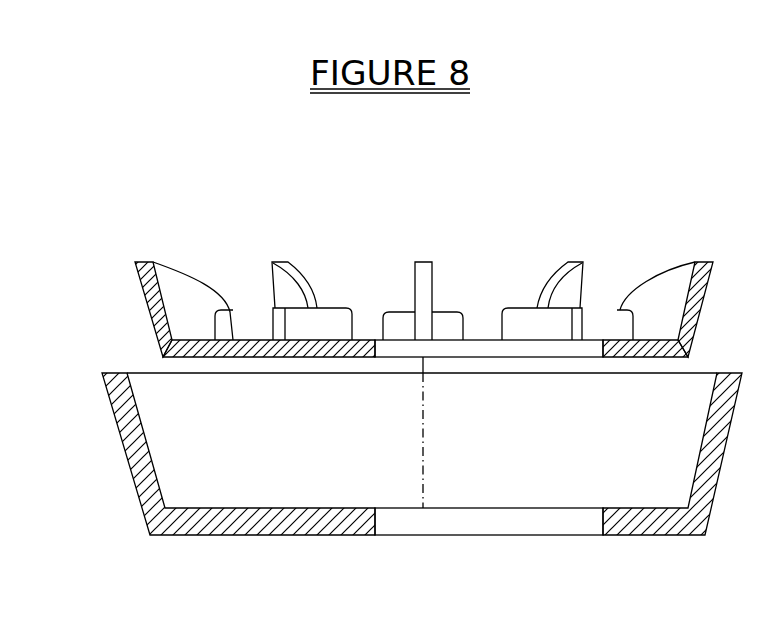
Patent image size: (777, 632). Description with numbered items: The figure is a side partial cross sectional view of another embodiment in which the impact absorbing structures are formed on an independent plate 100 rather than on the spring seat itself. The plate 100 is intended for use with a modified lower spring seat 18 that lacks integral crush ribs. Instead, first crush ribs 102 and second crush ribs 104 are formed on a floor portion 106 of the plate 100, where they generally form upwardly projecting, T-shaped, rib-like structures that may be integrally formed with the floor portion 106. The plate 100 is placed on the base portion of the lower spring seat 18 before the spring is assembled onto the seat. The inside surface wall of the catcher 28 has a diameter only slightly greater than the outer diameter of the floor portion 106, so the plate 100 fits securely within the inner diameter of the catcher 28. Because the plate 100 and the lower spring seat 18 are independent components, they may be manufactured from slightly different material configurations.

The plate 100 is at (95, 279).
The first crush ribs 102 is at (422, 268).
The second crush ribs 104 is at (402, 323).
The floor portion 106 is at (172, 343).
The catcher 28 is at (130, 445).
The lower spring seat 18 is at (221, 554).